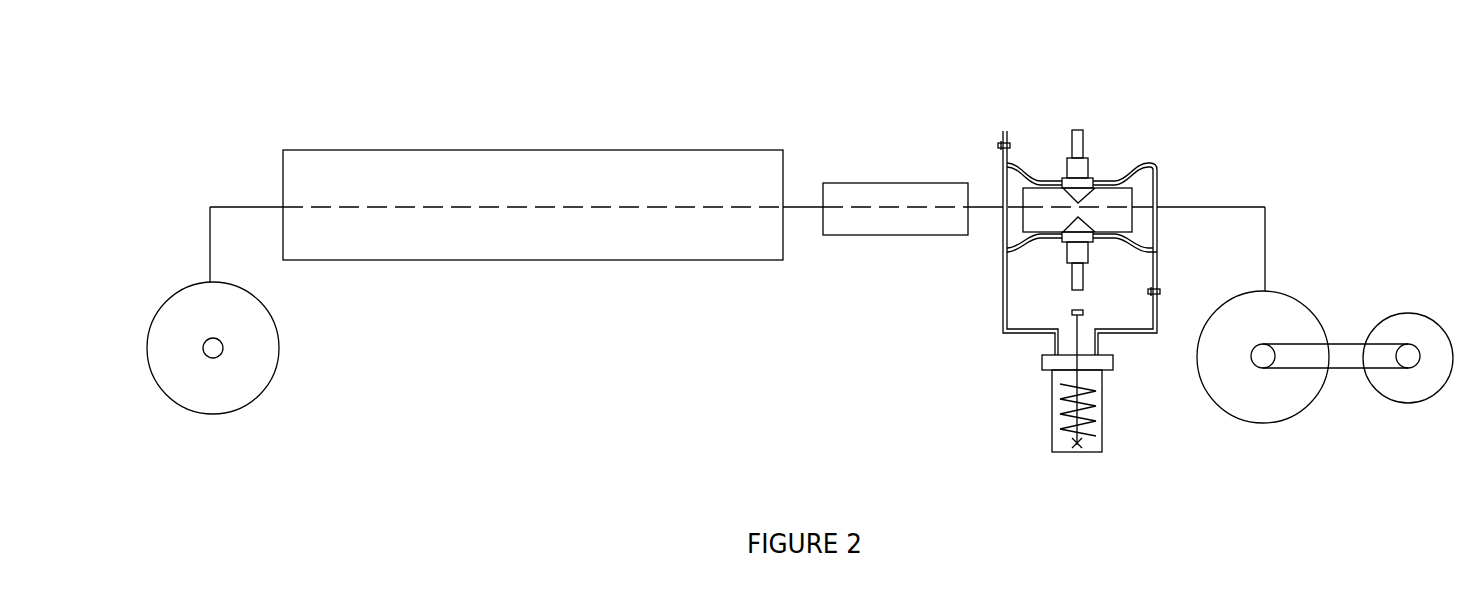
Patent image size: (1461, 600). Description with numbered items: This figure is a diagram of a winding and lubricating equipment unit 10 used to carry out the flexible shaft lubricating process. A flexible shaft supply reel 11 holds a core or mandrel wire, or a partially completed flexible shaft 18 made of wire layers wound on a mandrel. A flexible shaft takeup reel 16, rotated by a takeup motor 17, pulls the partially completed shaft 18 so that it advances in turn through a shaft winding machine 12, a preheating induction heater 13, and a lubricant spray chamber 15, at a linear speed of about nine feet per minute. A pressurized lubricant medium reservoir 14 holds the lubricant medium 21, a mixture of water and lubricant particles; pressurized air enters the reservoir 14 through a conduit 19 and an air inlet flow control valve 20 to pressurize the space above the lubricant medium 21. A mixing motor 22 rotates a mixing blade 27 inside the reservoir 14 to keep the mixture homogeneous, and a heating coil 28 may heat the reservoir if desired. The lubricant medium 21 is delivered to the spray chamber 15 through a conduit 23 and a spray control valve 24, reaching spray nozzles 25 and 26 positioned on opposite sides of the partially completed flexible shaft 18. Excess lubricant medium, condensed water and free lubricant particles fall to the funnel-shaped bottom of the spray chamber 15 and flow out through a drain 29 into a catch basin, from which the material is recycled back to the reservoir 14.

The winding and lubricating equipment unit 10 is at (702, 423).
The flexible shaft supply reel 11 is at (200, 418).
The shaft winding machine 12 is at (538, 150).
The preheating induction heater 13 is at (895, 182).
The pressurized lubricant medium reservoir 14 is at (1050, 407).
The lubricant spray chamber 15 is at (1130, 182).
The flexible shaft takeup reel 16 is at (1277, 423).
The takeup motor 17 is at (1398, 310).
The partially completed flexible shaft 18 is at (595, 208).
The conduit 19 is at (1022, 162).
The air inlet flow control valve 20 is at (999, 142).
The lubricant medium 21 is at (1098, 385).
The mixing motor 22 is at (1067, 313).
The conduit 23 is at (1142, 247).
The spray control valve 24 is at (1163, 285).
The spray nozzle 25 is at (1082, 128).
The spray nozzle 26 is at (1042, 267).
The mixing blade 27 is at (1075, 453).
The heating coil 28 is at (1100, 438).
The drain 29 is at (1117, 227).